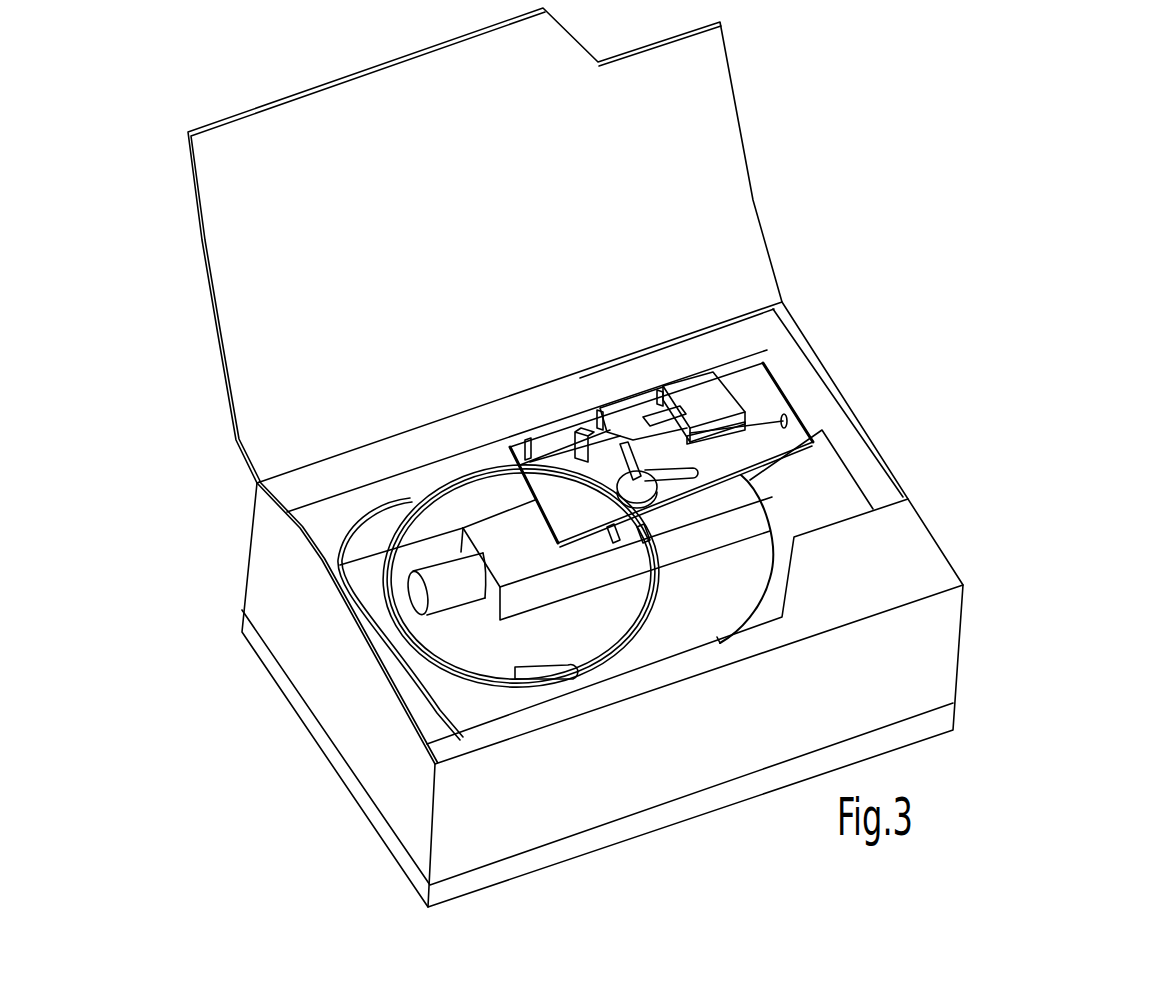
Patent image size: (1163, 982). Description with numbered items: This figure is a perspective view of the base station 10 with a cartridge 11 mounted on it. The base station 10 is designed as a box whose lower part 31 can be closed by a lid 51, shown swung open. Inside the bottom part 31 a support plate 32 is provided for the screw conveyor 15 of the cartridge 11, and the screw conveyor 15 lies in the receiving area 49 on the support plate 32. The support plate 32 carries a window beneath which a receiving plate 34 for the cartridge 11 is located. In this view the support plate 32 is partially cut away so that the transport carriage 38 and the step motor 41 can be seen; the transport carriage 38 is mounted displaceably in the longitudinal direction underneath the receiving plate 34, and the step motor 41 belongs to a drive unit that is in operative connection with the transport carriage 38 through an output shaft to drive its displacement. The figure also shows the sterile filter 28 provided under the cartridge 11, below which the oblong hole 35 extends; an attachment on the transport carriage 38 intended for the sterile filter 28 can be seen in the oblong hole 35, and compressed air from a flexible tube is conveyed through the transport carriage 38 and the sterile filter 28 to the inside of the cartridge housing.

The base station 10 is at (350, 690).
The cartridge 11 is at (697, 393).
The screw conveyor 15 is at (453, 597).
The sterile filter 28 is at (680, 503).
The bottom part 31 is at (663, 457).
The support plate 32 is at (813, 490).
The receiving plate 34 is at (760, 400).
The oblong hole 35 is at (743, 475).
The transport carriage 38 is at (652, 522).
The step motor 41 is at (450, 587).
The receiving area 49 is at (585, 650).
The lid 51 is at (707, 182).